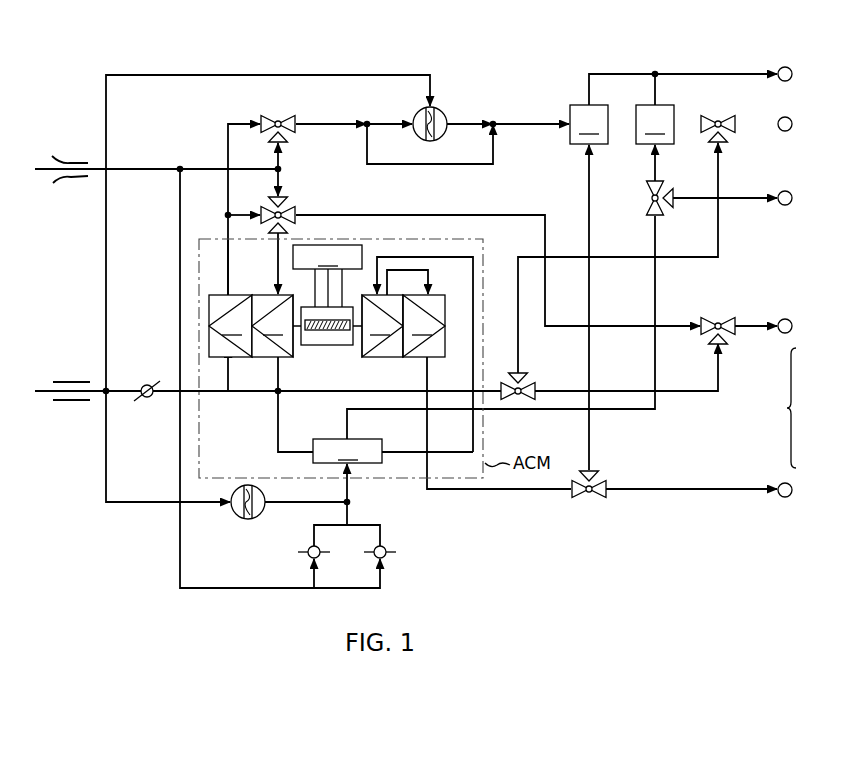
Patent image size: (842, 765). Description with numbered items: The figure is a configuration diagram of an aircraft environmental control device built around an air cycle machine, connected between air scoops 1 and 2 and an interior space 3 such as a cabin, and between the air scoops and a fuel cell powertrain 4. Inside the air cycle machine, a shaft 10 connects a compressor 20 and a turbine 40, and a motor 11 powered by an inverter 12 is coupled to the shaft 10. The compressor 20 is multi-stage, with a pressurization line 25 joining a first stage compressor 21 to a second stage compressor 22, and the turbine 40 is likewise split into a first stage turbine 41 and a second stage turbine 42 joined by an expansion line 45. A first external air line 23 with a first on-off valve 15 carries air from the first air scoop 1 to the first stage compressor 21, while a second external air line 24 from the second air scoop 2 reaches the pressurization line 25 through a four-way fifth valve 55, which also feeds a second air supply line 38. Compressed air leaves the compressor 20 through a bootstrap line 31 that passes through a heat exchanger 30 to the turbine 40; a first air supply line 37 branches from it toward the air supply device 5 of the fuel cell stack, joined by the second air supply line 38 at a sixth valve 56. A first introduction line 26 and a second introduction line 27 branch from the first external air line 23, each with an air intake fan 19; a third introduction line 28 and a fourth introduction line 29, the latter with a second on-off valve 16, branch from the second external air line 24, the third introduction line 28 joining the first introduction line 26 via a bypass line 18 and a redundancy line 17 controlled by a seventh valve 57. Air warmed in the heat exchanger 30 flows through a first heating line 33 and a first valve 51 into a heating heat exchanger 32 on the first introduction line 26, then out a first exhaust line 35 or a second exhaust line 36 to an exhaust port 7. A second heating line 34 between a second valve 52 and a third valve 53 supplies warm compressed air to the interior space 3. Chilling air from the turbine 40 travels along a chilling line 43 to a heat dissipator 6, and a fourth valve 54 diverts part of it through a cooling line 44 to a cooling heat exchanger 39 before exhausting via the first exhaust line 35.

The first air scoop 1 is at (69, 379).
The second air scoop 2 is at (70, 158).
The interior space 3 is at (792, 119).
The fuel cell powertrain 4 is at (784, 408).
The air supply device 5 is at (791, 332).
The heat dissipator 6 is at (791, 484).
The exhaust port 7 is at (792, 69).
The shaft 10 is at (353, 345).
The motor 11 is at (328, 345).
The inverter 12 is at (327, 276).
The first on-off valve 15 is at (143, 383).
The second on-off valve 16 is at (383, 547).
The redundancy line 17 is at (227, 150).
The bypass line 18 is at (422, 166).
The air intake fan 19 is at (440, 112).
The compressor 20 is at (263, 299).
The first stage compressor 21 is at (230, 326).
The second stage compressor 22 is at (272, 326).
The first external air line 23 is at (216, 395).
The second external air line 24 is at (282, 175).
The pressurization line 25 is at (229, 265).
The first introduction line 26 is at (148, 74).
The second introduction line 27 is at (127, 503).
The third introduction line 28 is at (315, 122).
The fourth introduction line 29 is at (179, 576).
The heat exchanger 30 is at (347, 451).
The bootstrap line 31 is at (438, 452).
The heating heat exchanger 32 is at (655, 124).
The first heating line 33 is at (658, 293).
The second heating line 34 is at (605, 256).
The first exhaust line 35 is at (683, 73).
The second exhaust line 36 is at (734, 198).
The first air supply line 37 is at (607, 390).
The second air supply line 38 is at (550, 293).
The cooling heat exchanger 39 is at (589, 124).
The turbine 40 is at (433, 344).
The first stage turbine 41 is at (382, 326).
The second stage turbine 42 is at (424, 326).
The chilling line 43 is at (670, 487).
The cooling line 44 is at (592, 293).
The expansion line 45 is at (432, 286).
The first valve 51 is at (660, 178).
The second valve 52 is at (524, 373).
The third valve 53 is at (714, 116).
The fourth valve 54 is at (596, 473).
The fifth valve 55 is at (296, 213).
The sixth valve 56 is at (717, 318).
The seventh valve 57 is at (269, 115).